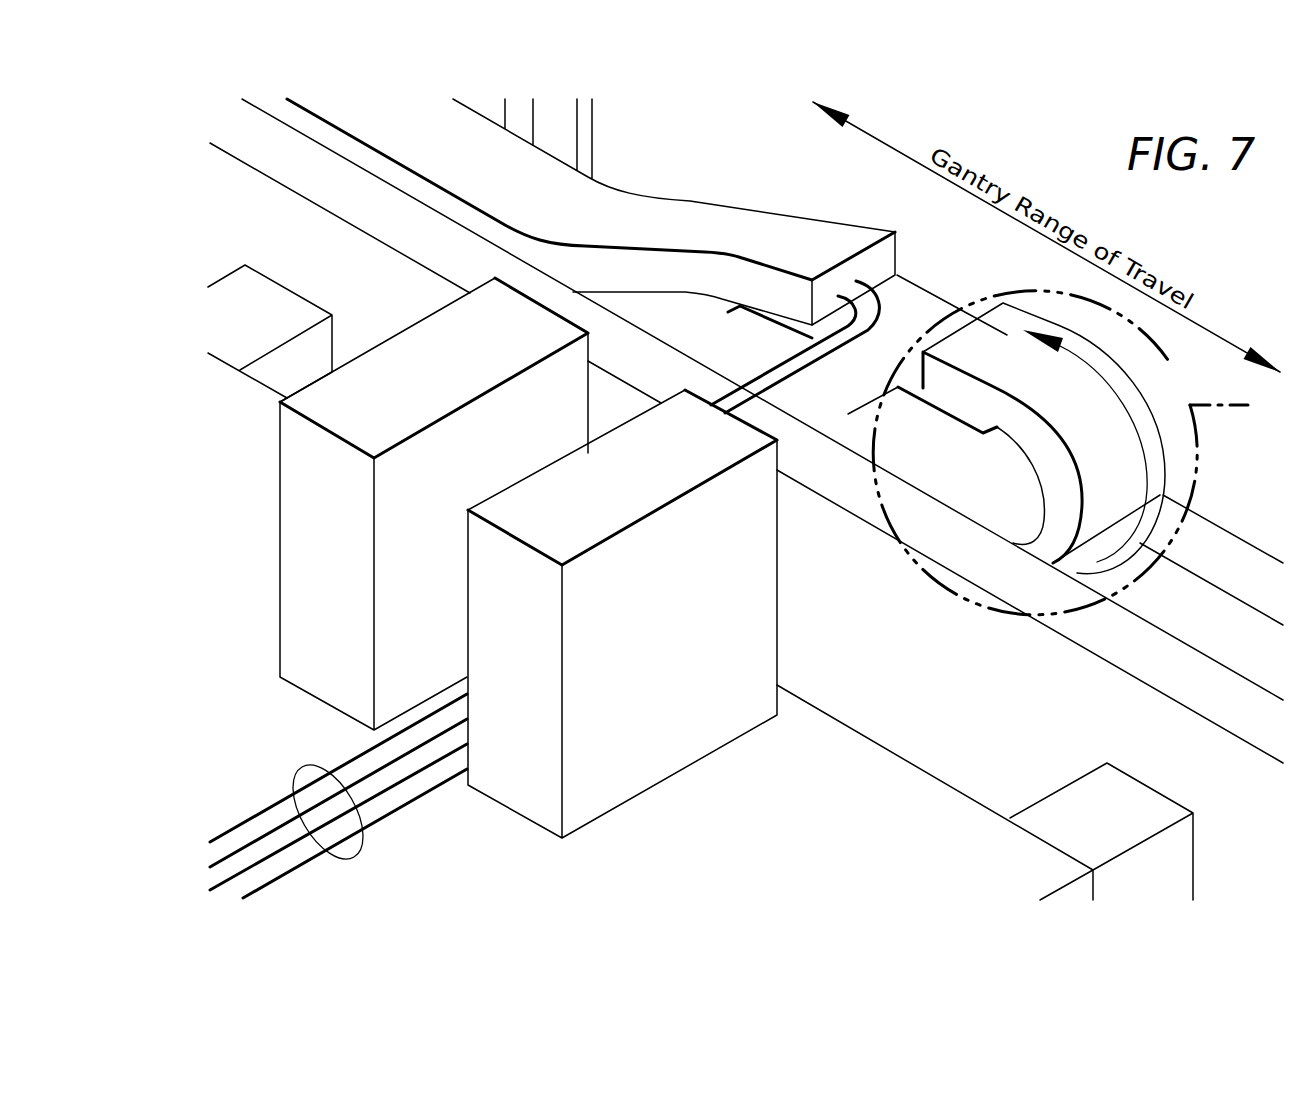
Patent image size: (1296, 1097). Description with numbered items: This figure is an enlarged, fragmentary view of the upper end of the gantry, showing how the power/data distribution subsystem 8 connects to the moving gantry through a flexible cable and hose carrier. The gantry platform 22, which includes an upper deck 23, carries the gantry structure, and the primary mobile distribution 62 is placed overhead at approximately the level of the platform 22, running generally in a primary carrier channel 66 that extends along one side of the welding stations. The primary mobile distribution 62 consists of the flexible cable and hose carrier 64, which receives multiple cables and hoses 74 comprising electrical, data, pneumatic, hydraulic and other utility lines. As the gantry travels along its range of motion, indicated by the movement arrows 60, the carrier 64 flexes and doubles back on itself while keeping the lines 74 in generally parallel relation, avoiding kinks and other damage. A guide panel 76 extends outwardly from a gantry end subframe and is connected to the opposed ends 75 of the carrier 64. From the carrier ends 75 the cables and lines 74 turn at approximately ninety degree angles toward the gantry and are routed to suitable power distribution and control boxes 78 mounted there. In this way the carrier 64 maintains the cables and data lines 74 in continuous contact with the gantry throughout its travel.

The power/data distribution subsystem 8 is at (1219, 384).
The platform 22 is at (825, 815).
The upper deck 23 is at (771, 852).
The movement arrows 60 is at (1117, 412).
The primary mobile distribution 62 is at (762, 179).
The flexible cable and hose carrier 64 is at (1008, 298).
The primary carrier channel 66 is at (1118, 668).
The cables and hoses 74 is at (896, 354).
The carrier ends 75 is at (898, 253).
The guide panel 76 is at (931, 405).
The power distribution and control boxes 78 is at (374, 458).